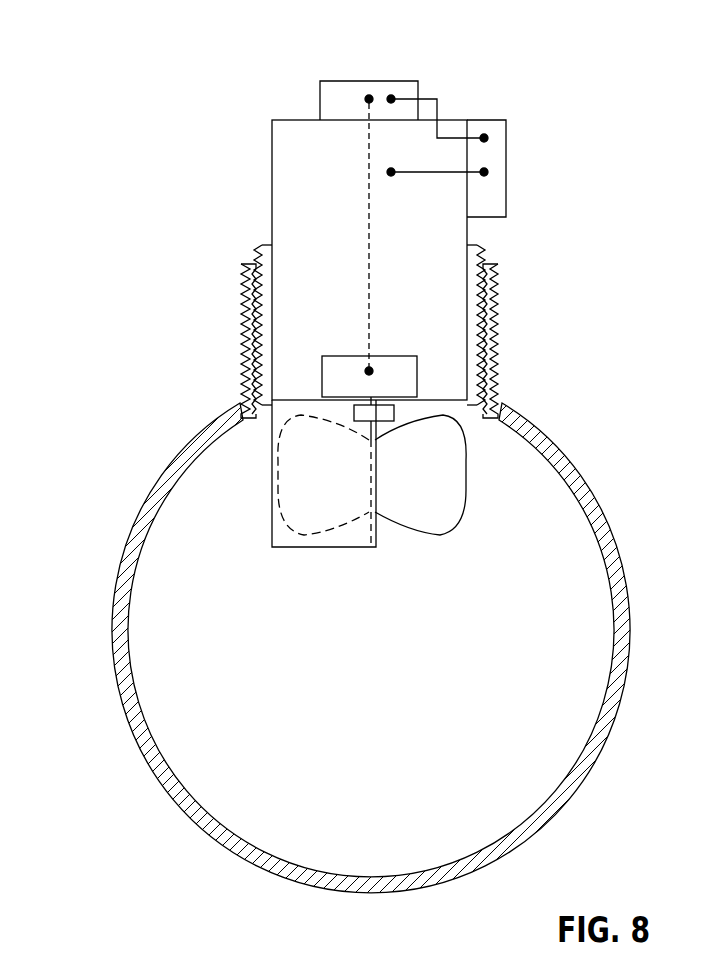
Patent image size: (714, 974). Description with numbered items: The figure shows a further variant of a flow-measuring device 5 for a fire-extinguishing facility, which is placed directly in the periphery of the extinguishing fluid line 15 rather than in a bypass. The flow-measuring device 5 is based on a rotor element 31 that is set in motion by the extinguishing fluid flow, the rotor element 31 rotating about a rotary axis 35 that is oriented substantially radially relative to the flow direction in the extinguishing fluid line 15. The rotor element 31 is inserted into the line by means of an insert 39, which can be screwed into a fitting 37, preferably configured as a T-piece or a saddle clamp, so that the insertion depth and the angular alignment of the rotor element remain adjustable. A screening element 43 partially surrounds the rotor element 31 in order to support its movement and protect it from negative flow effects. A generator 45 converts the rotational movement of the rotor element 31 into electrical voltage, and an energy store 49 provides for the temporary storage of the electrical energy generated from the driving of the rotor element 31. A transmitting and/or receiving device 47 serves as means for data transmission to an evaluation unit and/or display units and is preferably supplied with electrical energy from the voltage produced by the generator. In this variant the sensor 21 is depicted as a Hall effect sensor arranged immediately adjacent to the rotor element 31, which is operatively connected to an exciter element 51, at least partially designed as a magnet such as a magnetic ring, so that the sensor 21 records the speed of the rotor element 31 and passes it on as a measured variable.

The flow-measuring device 5 is at (104, 93).
The extinguishing fluid line 15 is at (589, 470).
The sensor 21 is at (382, 352).
The rotor element 31 is at (430, 499).
The rotary axis 35 is at (381, 536).
The fitting 37 is at (502, 318).
The insert 39 is at (252, 255).
The screening element 43 is at (266, 519).
The generator 45 is at (266, 175).
The transmitting and/or receiving device 47 is at (316, 101).
The energy store 49 is at (518, 175).
The exciter element 51 is at (345, 413).